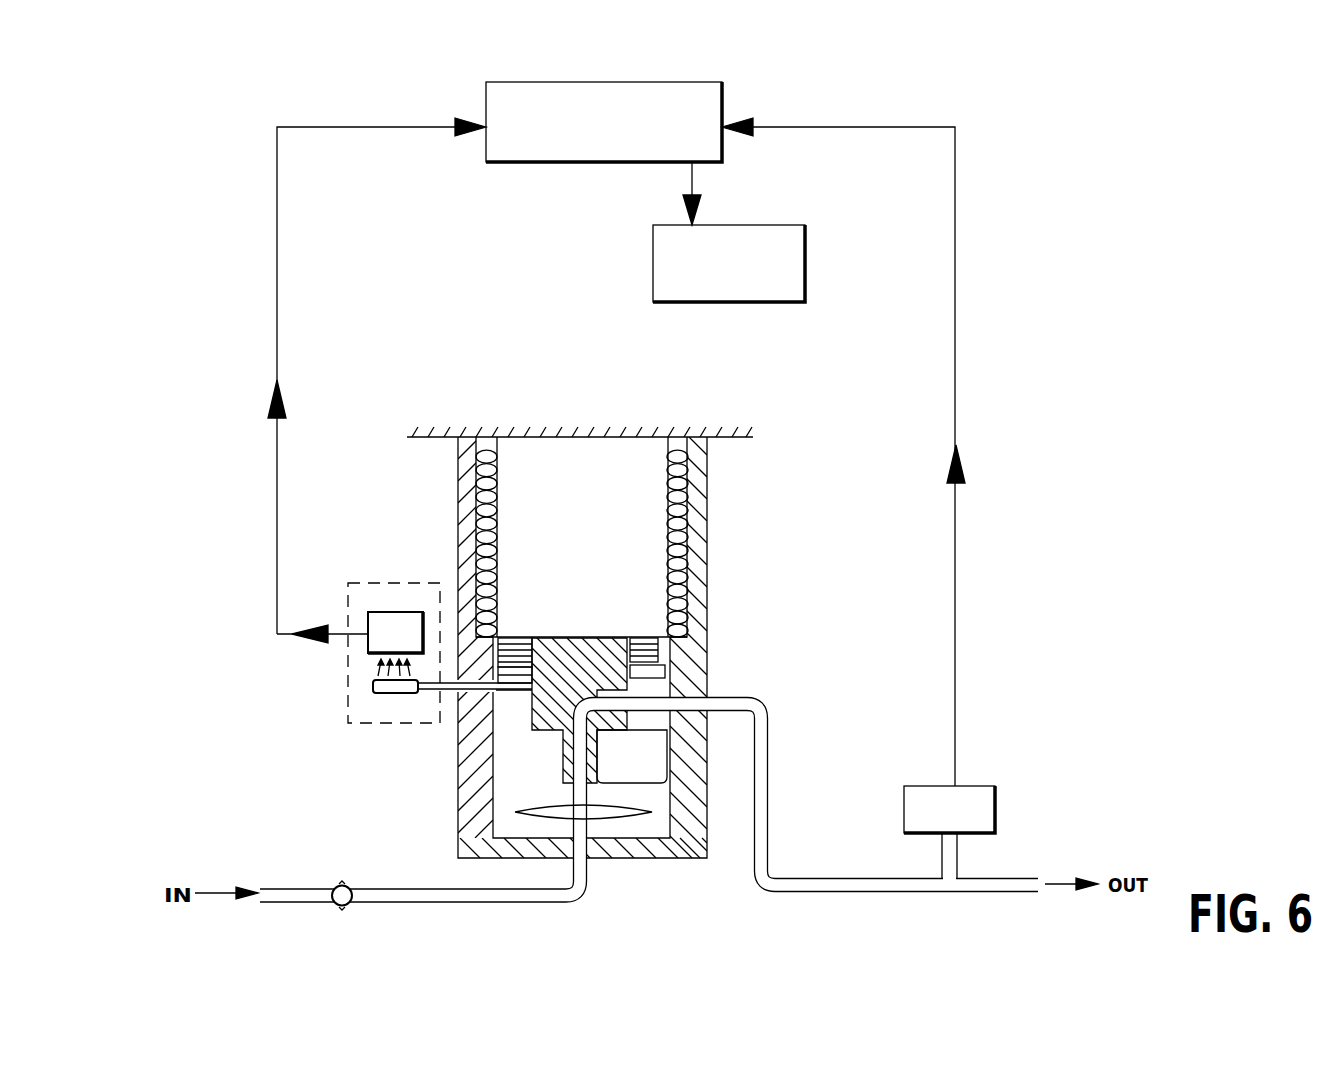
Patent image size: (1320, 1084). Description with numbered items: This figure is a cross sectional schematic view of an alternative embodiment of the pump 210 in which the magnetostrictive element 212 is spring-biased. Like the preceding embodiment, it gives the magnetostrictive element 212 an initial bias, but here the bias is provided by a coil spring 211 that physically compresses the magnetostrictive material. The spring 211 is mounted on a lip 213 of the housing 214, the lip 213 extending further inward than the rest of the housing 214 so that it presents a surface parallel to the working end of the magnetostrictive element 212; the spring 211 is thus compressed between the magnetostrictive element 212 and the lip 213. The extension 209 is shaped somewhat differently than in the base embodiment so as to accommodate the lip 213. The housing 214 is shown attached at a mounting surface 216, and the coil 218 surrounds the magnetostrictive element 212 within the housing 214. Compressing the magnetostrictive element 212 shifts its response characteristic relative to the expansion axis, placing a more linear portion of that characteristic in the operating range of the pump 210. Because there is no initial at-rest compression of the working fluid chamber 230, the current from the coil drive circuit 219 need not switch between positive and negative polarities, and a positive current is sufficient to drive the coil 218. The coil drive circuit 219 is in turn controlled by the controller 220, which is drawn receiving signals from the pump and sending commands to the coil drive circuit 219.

The extension 209 is at (602, 758).
The pump 210 is at (649, 640).
The coil spring 211 is at (648, 645).
The magnetostrictive element 212 is at (591, 553).
The lip 213 is at (513, 640).
The housing 214 is at (708, 548).
The mounting surface 216 is at (516, 437).
The coil 218 is at (690, 500).
The coil drive circuit 219 is at (663, 270).
The controller 220 is at (500, 146).
The working fluid chamber 230 is at (707, 790).